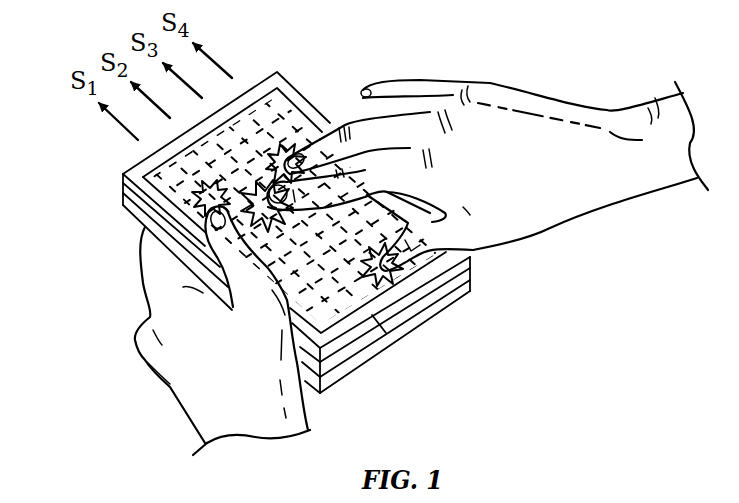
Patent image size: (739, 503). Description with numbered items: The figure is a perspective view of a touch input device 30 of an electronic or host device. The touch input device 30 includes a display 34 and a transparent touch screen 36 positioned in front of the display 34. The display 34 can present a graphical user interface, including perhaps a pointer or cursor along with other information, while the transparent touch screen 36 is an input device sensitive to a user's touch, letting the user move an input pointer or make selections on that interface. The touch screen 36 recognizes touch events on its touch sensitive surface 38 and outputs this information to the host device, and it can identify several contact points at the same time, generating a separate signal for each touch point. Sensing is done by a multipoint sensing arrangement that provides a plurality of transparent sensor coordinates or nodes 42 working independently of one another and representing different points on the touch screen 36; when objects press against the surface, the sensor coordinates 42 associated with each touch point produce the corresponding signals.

The touch input device 30 is at (313, 80).
The display 34 is at (475, 280).
The transparent touch screen 36 is at (296, 207).
The touch sensitive surface 38 is at (122, 189).
The sensor coordinates 42 is at (386, 333).